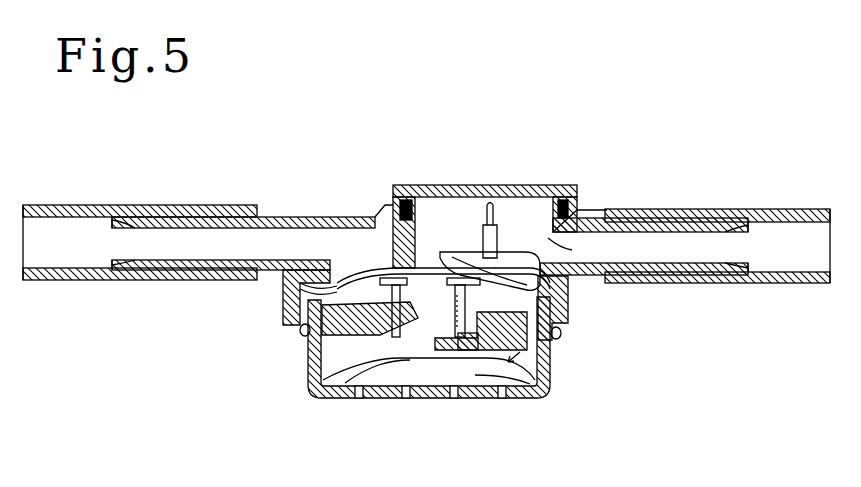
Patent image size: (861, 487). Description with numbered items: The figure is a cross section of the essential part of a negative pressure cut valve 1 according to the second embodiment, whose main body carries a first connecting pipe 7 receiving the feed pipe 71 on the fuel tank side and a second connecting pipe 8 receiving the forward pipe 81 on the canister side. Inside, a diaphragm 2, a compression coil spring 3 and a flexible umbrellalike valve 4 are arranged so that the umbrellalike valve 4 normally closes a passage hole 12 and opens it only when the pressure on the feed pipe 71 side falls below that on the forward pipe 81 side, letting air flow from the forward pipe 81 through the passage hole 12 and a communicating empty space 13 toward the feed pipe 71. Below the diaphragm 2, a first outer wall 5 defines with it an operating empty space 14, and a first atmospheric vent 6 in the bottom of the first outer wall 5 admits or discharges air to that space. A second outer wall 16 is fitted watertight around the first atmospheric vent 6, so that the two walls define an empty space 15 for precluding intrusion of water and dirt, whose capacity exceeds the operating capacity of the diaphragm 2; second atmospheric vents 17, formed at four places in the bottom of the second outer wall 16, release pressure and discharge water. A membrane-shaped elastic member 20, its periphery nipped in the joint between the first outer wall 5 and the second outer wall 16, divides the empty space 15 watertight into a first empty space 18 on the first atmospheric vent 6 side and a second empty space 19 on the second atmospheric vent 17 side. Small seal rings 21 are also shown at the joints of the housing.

The negative pressure cut valve 1 is at (507, 162).
The diaphragm 2 is at (383, 268).
The compression coil spring 3 is at (403, 268).
The flexible umbrellalike valve 4 is at (483, 228).
The first outer wall 5 is at (315, 365).
The first atmospheric vent 6 is at (432, 343).
The first connecting pipe 7 is at (180, 266).
The feed pipe 71 is at (84, 212).
The second connecting pipe 8 is at (688, 223).
The forward pipe 81 is at (782, 212).
The passage hole 12 is at (503, 260).
The communicating empty space 13 is at (557, 248).
The operating empty space 14 is at (336, 396).
The empty space for precluding intrusion 15 is at (475, 375).
The second outer wall 16 is at (481, 398).
The second atmospheric vents 17 is at (358, 397).
The first empty space 18 is at (503, 343).
The second empty space 19 is at (540, 398).
The elastic member 20 is at (322, 390).
The seal ring 21 is at (310, 335).